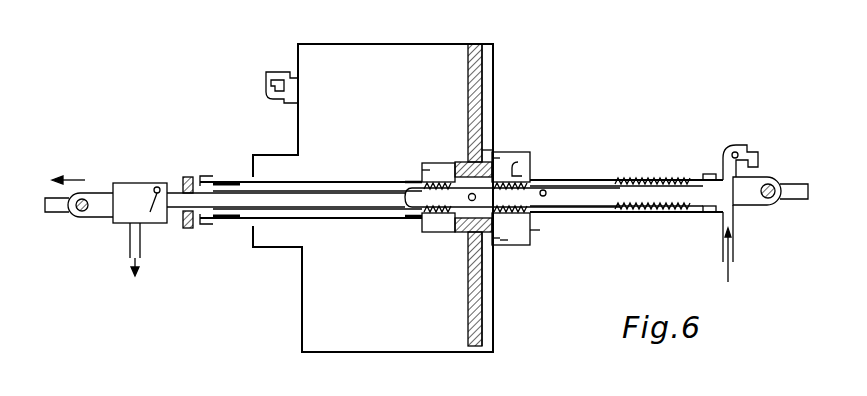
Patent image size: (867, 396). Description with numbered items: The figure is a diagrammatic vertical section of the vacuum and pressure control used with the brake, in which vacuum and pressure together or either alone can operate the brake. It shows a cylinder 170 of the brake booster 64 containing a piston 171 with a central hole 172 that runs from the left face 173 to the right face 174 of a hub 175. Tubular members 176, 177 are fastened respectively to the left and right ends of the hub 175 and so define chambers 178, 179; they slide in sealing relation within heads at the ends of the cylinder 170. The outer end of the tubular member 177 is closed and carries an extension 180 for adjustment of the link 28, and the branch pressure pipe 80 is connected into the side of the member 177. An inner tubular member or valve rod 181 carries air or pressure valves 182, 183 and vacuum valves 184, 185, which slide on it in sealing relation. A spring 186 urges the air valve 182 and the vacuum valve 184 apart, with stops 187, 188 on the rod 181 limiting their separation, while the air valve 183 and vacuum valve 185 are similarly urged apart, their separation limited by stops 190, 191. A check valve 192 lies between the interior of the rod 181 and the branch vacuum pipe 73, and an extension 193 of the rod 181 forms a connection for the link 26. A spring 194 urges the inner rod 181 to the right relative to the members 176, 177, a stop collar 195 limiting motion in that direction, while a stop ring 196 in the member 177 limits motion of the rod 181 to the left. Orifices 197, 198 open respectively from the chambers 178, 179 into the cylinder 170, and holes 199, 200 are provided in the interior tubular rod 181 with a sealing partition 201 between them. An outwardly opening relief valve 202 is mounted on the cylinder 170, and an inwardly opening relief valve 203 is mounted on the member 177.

The cylinder 170 is at (411, 58).
The outwardly opening relief valve 202 is at (279, 73).
The brake booster 64 is at (494, 74).
The piston 171 is at (478, 114).
The central hole 172 is at (495, 152).
The orifice 198 is at (525, 152).
The orifice 197 is at (437, 161).
The hub 175 is at (462, 161).
The spring 186 is at (431, 165).
The air valve 182 is at (421, 180).
The stop 187 is at (414, 182).
The vacuum valve 185 is at (521, 160).
The air valve 183 is at (536, 163).
The stop 191 is at (546, 190).
The hole 200 is at (560, 188).
The tubular member 177 is at (612, 181).
The stop collar 195 is at (188, 229).
The inwardly opening relief valve 203 is at (745, 151).
The extension 180 is at (756, 182).
The link 28 is at (794, 193).
The branch pressure pipe 80 is at (735, 226).
The stop ring 196 is at (668, 211).
The spring 194 is at (662, 213).
The stop 190 is at (526, 229).
The chamber 179 is at (518, 245).
The right face 174 is at (500, 237).
The stop 188 is at (496, 246).
The sealing partition 201 is at (503, 244).
The left face 173 is at (447, 233).
The chamber 178 is at (440, 233).
The vacuum valve 184 is at (425, 217).
The hole 199 is at (430, 214).
The tubular member 176 is at (352, 220).
The valve rod 181 is at (330, 188).
The extension 193 is at (92, 193).
The check valve 192 is at (152, 198).
The link 26 is at (57, 210).
The branch vacuum pipe 73 is at (129, 238).